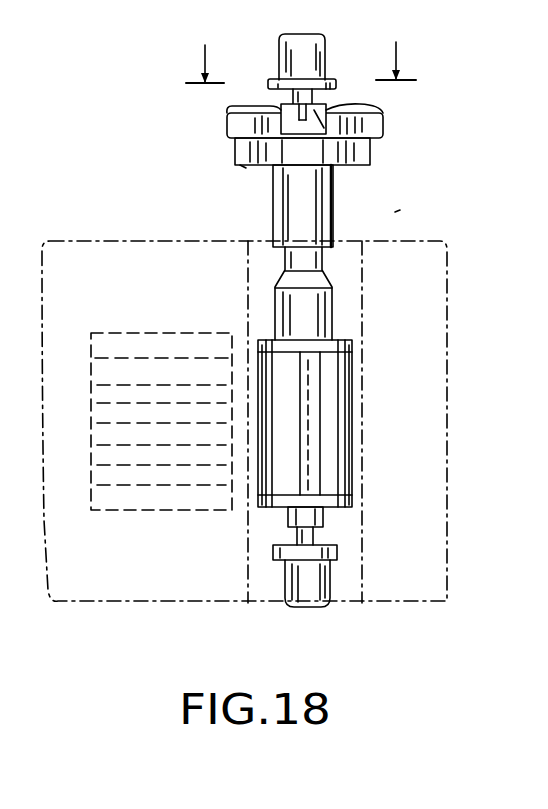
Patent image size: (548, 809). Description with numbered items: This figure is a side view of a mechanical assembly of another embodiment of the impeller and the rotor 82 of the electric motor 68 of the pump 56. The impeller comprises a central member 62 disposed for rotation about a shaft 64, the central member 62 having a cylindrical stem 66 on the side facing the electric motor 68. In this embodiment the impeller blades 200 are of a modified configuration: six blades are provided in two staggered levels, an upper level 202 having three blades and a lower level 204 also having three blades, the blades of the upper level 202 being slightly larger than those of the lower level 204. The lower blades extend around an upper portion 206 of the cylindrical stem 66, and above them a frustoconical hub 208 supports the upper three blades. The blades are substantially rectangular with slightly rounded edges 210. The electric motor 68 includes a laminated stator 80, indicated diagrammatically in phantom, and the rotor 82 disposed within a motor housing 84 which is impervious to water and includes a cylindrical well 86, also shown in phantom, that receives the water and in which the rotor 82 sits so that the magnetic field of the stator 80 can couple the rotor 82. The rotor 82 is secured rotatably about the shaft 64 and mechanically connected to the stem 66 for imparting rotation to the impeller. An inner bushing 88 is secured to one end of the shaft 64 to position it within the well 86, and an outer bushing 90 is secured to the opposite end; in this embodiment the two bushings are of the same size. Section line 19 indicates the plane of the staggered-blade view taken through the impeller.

The section line 19- 19 is at (303, 47).
The outer bushing 90 is at (283, 46).
The shaft 64 is at (315, 99).
The impeller blades 200 is at (193, 147).
The upper level 202 is at (383, 132).
The frustoconical hub 208 is at (332, 111).
The lower level 204 is at (370, 158).
The rounded edges 210 is at (228, 115).
The upper portion 206 is at (332, 178).
The cylindrical stem 66 is at (300, 203).
The central member 62 is at (254, 179).
The pump 56 is at (399, 212).
The motor housing 84 is at (450, 383).
The rotor 82 is at (352, 413).
The inner bushing 88 is at (326, 583).
The electric motor 68 is at (449, 357).
The cylindrical well 86 is at (357, 297).
The laminated stator 80 is at (157, 332).